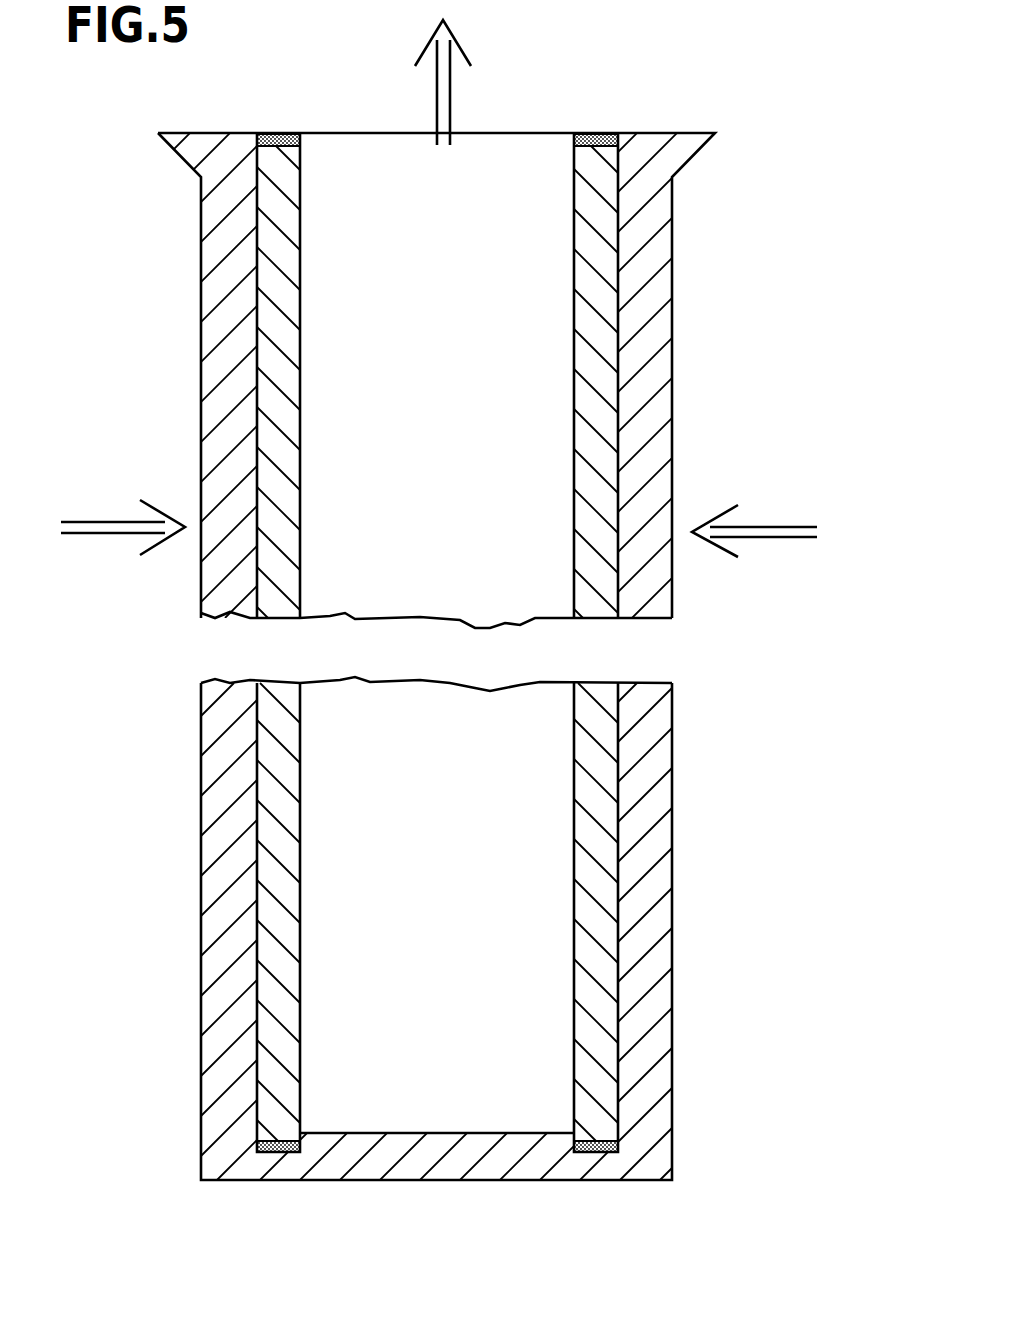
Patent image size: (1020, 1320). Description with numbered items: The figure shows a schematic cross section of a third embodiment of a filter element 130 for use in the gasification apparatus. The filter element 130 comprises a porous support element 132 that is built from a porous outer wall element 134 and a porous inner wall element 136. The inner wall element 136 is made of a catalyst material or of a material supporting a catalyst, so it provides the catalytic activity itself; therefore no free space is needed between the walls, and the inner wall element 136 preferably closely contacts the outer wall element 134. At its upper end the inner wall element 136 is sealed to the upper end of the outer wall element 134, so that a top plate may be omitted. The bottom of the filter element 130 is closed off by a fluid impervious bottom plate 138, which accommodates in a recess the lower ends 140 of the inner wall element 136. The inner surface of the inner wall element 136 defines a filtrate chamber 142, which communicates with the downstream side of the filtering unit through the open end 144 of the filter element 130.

The filter element 130 is at (483, 632).
The porous support element 132 is at (583, 82).
The porous outer wall element 134 is at (673, 443).
The porous inner wall element 136 is at (287, 343).
The fluid impervious bottom plate 138 is at (435, 1148).
The lower ends of the porous inner wall element 140 is at (268, 1150).
The filtrate chamber 142 is at (467, 938).
The open end 144 is at (300, 153).